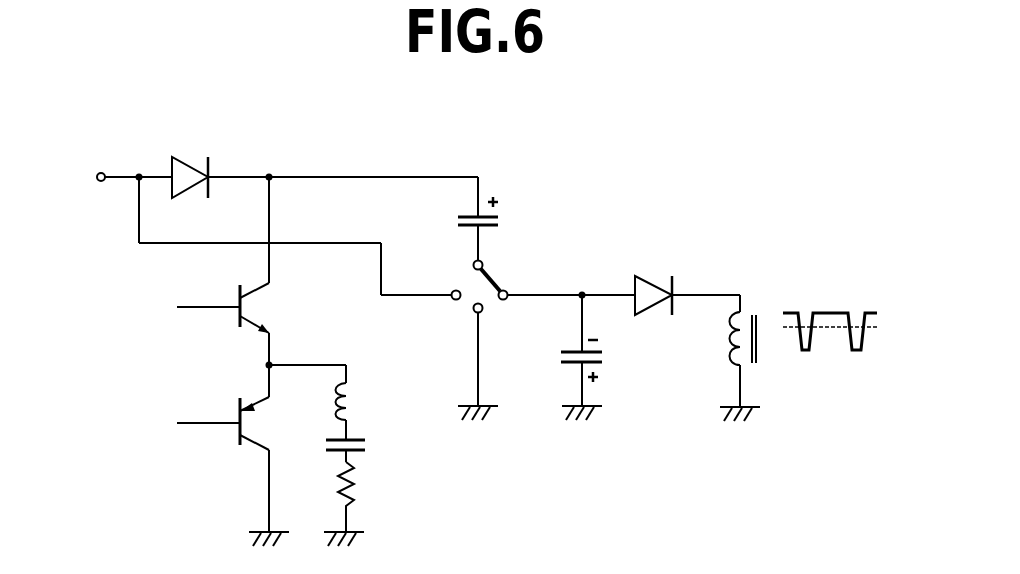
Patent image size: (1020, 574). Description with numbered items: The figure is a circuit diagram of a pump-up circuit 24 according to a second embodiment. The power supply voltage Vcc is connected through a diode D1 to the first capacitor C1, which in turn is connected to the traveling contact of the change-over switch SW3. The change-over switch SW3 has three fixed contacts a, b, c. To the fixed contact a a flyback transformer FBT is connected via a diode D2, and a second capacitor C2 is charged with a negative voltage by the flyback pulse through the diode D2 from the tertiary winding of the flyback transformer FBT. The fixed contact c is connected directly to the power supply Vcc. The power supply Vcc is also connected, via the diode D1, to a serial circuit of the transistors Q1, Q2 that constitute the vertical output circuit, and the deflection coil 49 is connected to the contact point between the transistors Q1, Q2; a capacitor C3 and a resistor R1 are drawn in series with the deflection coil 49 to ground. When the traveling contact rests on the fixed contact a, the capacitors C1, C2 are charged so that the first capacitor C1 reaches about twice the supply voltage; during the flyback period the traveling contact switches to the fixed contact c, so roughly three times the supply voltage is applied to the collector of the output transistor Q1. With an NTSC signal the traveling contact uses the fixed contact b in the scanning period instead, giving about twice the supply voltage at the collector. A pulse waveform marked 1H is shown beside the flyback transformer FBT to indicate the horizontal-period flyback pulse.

The pump-up circuit 24 is at (573, 157).
The deflection coil 49 is at (353, 402).
The power supply voltage Vcc is at (97, 162).
The diode D1 is at (190, 161).
The diode D2 is at (653, 280).
The output transistor Q1 is at (223, 305).
The transistor Q2 is at (223, 423).
The first capacitor C1 is at (497, 216).
The second capacitor C2 is at (598, 361).
The capacitor C3 is at (363, 446).
The resistor R1 is at (369, 486).
The change-over switch SW3 is at (466, 291).
The fixed contact a is at (512, 285).
The fixed contact b is at (488, 314).
The fixed contact c is at (451, 306).
The flyback transformer FBT is at (760, 320).
The horizontal period waveform 1H is at (859, 372).